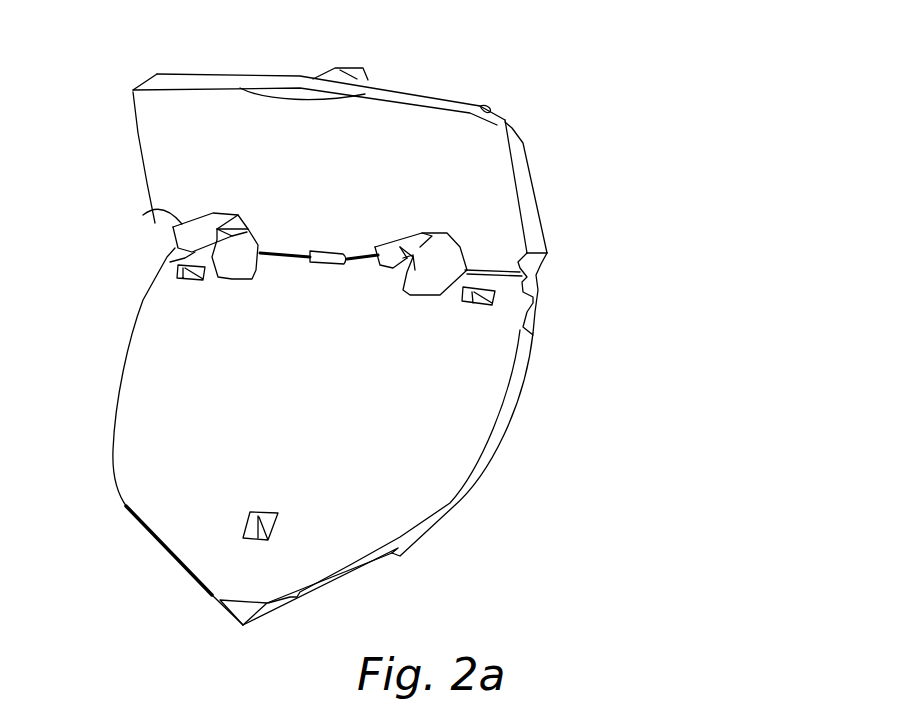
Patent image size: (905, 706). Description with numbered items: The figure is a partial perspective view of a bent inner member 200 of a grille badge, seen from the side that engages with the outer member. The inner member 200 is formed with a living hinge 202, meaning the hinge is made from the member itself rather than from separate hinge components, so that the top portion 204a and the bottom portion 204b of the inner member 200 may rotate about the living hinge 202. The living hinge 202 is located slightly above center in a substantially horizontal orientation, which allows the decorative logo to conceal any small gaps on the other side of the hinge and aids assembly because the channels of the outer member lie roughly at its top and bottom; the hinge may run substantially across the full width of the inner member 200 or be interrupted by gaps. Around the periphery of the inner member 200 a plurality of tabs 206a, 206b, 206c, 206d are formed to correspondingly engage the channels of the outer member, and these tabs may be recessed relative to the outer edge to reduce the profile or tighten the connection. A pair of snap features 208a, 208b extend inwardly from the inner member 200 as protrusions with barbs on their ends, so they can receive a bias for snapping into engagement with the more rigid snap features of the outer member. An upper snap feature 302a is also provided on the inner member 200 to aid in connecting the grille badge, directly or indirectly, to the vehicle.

The inner member 200 is at (452, 40).
The living hinge 202 is at (165, 270).
The top portion 204a is at (420, 122).
The bottom portion 204b is at (400, 492).
The tab 206a is at (133, 91).
The tab 206b is at (504, 124).
The tab 206c is at (170, 560).
The tab 206d is at (340, 577).
The snap feature 208a is at (178, 227).
The snap feature 208b is at (384, 270).
The upper snap feature 302a is at (337, 64).